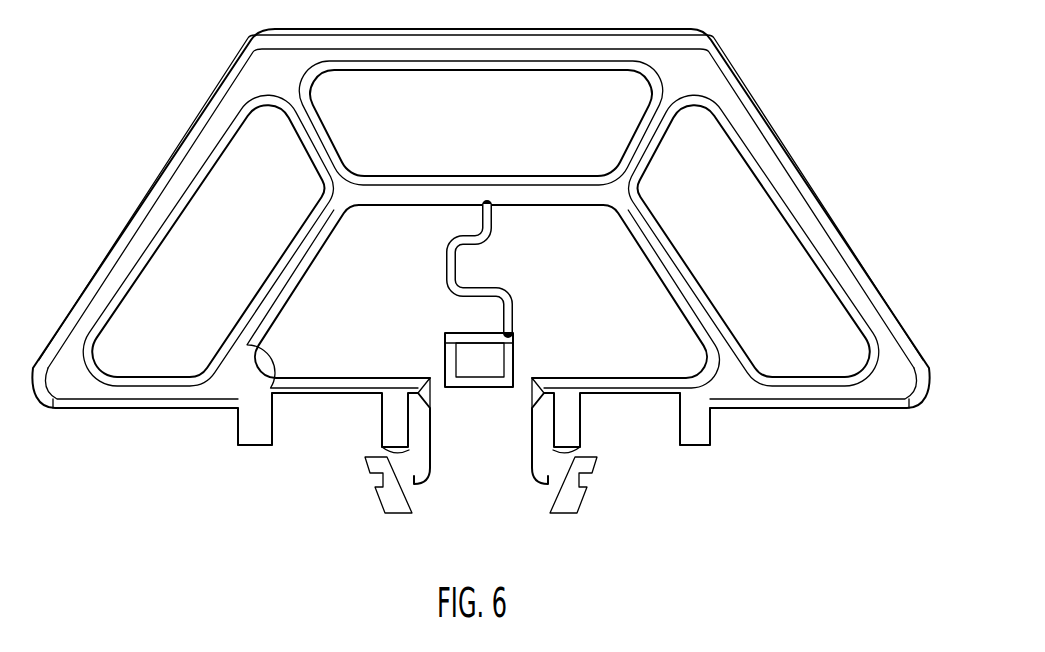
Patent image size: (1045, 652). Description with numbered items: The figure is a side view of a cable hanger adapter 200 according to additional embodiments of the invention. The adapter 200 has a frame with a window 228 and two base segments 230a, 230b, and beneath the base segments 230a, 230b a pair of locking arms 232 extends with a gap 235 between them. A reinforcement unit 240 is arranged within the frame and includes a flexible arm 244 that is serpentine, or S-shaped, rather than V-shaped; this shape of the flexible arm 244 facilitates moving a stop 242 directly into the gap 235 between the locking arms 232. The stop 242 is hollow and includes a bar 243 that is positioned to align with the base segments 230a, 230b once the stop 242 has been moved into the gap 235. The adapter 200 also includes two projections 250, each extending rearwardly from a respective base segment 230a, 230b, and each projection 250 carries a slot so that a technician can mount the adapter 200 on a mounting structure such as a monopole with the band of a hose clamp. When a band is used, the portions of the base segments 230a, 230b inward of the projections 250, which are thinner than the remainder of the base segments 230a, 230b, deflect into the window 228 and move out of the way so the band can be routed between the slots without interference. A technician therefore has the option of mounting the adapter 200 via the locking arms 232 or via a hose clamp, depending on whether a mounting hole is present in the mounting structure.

The cable hanger adapter 200 is at (897, 236).
The window 228 is at (347, 263).
The base segment 230a is at (330, 383).
The base segment 230b is at (637, 382).
The locking arms 232 is at (548, 486).
The gap 235 is at (520, 431).
The reinforcement unit 240 is at (581, 343).
The stop 242 is at (483, 381).
The bar 243 is at (468, 333).
The flexible arm 244 is at (488, 233).
The projections 250 is at (257, 450).